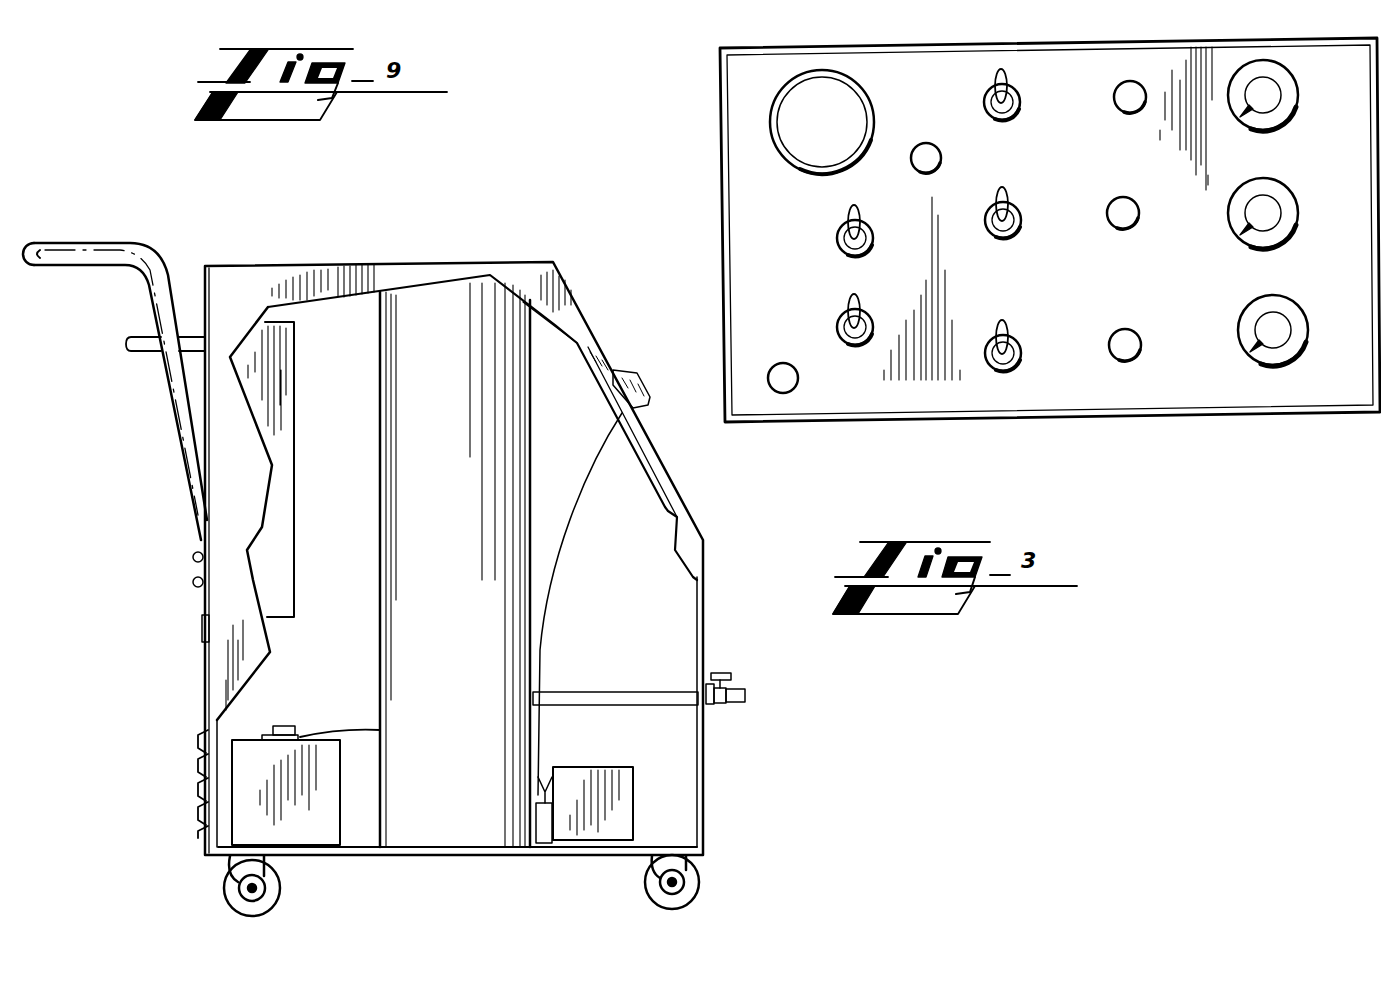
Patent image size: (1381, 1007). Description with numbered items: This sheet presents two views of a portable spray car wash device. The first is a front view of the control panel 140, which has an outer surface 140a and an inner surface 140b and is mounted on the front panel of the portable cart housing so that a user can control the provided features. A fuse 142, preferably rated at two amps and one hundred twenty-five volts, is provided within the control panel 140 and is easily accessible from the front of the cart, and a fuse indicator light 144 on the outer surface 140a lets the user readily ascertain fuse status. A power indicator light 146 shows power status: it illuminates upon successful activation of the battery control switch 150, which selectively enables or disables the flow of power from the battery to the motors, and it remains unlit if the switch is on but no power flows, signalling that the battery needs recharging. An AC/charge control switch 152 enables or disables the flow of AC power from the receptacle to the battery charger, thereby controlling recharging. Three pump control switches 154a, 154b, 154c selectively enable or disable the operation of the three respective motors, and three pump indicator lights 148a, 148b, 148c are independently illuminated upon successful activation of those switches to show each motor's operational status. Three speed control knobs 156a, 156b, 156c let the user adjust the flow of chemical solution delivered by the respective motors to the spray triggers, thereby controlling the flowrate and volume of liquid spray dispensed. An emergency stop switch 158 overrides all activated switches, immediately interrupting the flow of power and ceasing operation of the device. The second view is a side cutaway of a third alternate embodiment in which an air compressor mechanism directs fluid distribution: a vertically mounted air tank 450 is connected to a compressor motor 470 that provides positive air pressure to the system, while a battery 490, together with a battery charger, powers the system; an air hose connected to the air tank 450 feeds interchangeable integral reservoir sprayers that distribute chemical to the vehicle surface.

In FIG. 3, the control panel 140 is at (1322, 405).
In FIG. 3, the outer surface 140a is at (1277, 383).
In FIG. 3, the inner surface 140b is at (1196, 418).
In FIG. 3, the fuse 142 is at (795, 390).
In FIG. 3, the fuse indicator light 144 is at (768, 380).
In FIG. 3, the power indicator light 146 is at (915, 146).
In FIG. 3, the pump indicator light 148a is at (1118, 109).
In FIG. 3, the pump indicator light 148b is at (1135, 204).
In FIG. 3, the pump indicator light 148c is at (1122, 330).
In FIG. 3, the battery control switch 150 is at (840, 313).
In FIG. 3, the AC/charge control switch 152 is at (840, 248).
In FIG. 3, the pump control switch 154a is at (1020, 112).
In FIG. 3, the pump control switch 154b is at (1072, 228).
In FIG. 3, the pump control switch 154c is at (1021, 354).
In FIG. 3, the speed control knob 156a is at (1337, 92).
In FIG. 3, the speed control knob 156b is at (1281, 183).
In FIG. 3, the speed control knob 156c is at (1347, 317).
In FIG. 3, the emergency stop switch 158 is at (768, 120).
In FIG. 9, the air tank 450 is at (460, 553).
In FIG. 9, the compressor motor 470 is at (613, 828).
In FIG. 9, the battery 490 is at (328, 820).